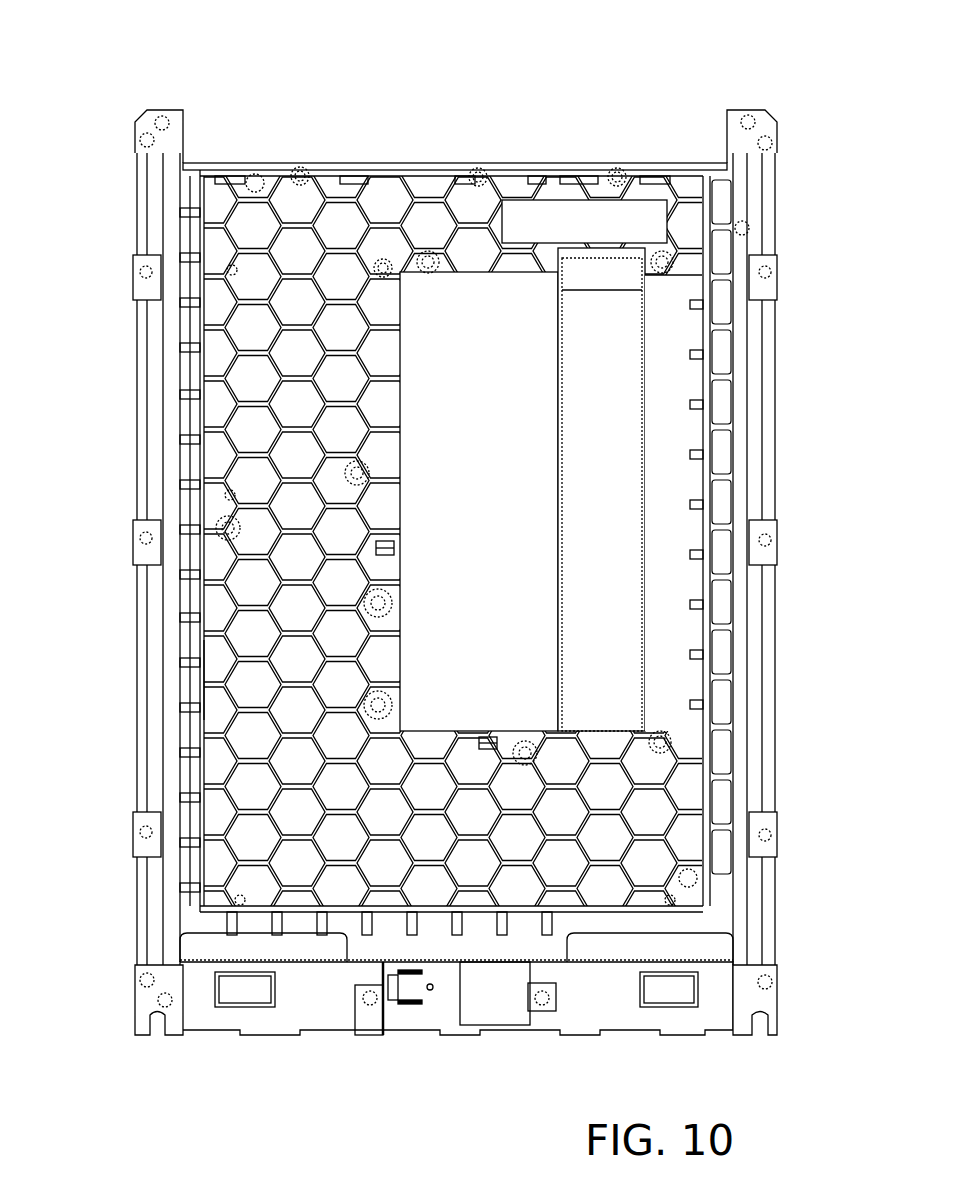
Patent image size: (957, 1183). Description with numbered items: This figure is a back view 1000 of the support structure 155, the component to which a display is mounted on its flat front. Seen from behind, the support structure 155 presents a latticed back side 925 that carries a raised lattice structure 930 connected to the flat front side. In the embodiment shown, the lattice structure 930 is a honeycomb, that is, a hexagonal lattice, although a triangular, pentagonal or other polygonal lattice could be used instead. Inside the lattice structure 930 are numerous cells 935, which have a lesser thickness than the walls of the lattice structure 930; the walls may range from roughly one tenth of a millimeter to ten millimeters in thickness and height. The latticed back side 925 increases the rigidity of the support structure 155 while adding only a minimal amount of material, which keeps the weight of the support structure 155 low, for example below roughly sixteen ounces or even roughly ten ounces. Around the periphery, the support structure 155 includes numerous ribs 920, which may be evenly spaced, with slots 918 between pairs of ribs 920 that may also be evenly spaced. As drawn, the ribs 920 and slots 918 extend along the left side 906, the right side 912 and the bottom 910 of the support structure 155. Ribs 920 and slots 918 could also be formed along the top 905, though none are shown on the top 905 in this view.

The support structure 155 is at (455, 548).
The top 905 is at (455, 147).
The left side 906 is at (790, 537).
The bottom 910 is at (456, 994).
The right side 912 is at (111, 537).
The slots 918 is at (192, 370).
The ribs 920 is at (192, 656).
The latticed back side 925 is at (680, 906).
The lattice structure 930 is at (431, 577).
The cells 935 is at (250, 737).
The back view 1000 is at (455, 584).